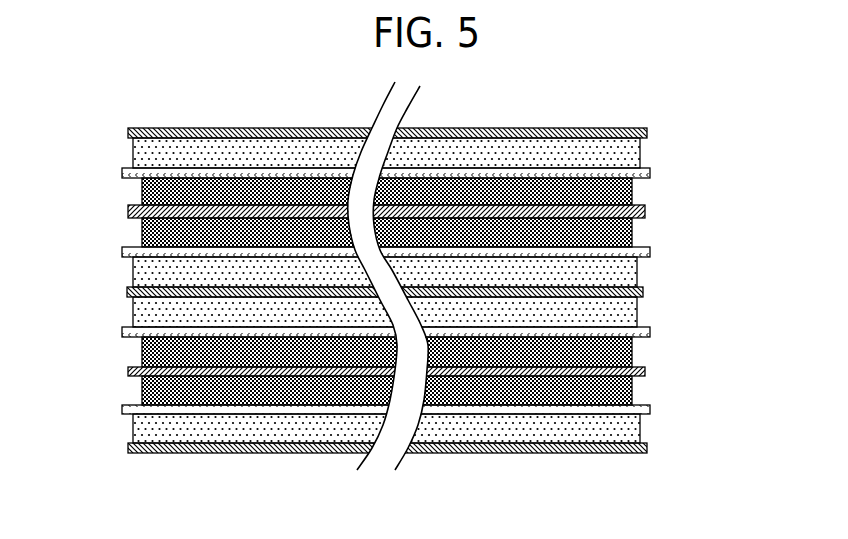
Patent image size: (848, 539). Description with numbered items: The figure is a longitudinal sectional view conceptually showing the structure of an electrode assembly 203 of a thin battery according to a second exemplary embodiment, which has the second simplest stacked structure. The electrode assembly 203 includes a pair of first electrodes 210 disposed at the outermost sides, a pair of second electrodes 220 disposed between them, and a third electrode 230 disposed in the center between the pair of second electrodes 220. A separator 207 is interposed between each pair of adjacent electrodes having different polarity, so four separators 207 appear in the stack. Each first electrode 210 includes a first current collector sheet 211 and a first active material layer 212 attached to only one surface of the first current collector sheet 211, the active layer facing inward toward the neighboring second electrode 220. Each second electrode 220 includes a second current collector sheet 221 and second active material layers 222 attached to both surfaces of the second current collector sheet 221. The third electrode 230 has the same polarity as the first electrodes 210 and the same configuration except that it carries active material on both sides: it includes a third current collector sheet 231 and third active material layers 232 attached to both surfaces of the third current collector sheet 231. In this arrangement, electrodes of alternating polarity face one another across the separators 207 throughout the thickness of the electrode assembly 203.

The electrode assembly 203 is at (560, 107).
The separator 207 is at (122, 172).
The first electrode 210 is at (462, 296).
The first current collector sheet 211 is at (645, 131).
The first active material layer 212 is at (632, 150).
The second electrode 220 is at (467, 302).
The second current collector sheet 221 is at (640, 212).
The second active material layer 222 is at (622, 192).
The third electrode 230 is at (467, 302).
The third current collector sheet 231 is at (640, 292).
The third active material layer 232 is at (630, 273).